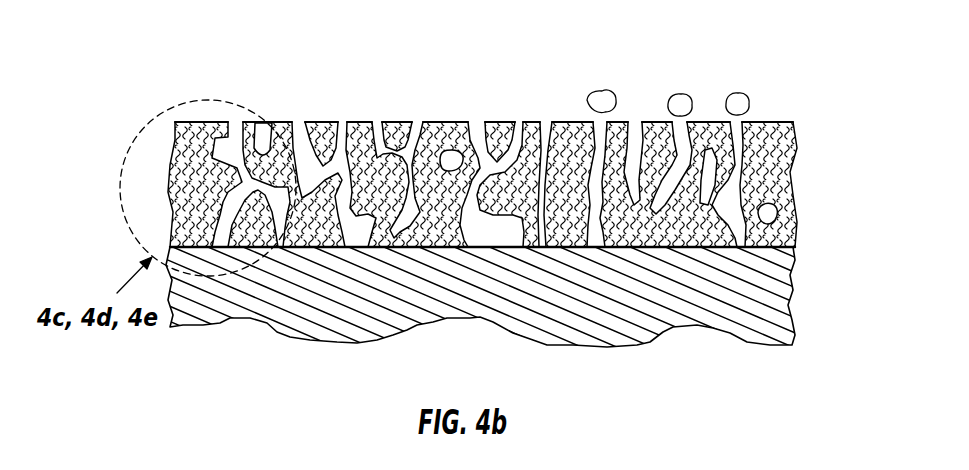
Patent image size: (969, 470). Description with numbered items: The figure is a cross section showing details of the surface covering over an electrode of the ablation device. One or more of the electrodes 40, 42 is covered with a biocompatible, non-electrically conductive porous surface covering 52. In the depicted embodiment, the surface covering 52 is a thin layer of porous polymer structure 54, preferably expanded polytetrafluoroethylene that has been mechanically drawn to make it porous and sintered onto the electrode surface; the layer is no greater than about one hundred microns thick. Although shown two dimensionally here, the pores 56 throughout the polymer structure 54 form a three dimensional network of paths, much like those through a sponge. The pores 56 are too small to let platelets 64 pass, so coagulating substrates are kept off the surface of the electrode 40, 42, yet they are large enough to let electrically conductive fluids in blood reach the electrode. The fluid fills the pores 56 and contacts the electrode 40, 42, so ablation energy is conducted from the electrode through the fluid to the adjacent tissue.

The electrode 40 is at (484, 311).
The electrode 42 is at (793, 295).
The surface covering 52 is at (520, 160).
The polymer structure 54 is at (510, 108).
The pores 56 is at (422, 122).
The platelets 64 is at (747, 102).